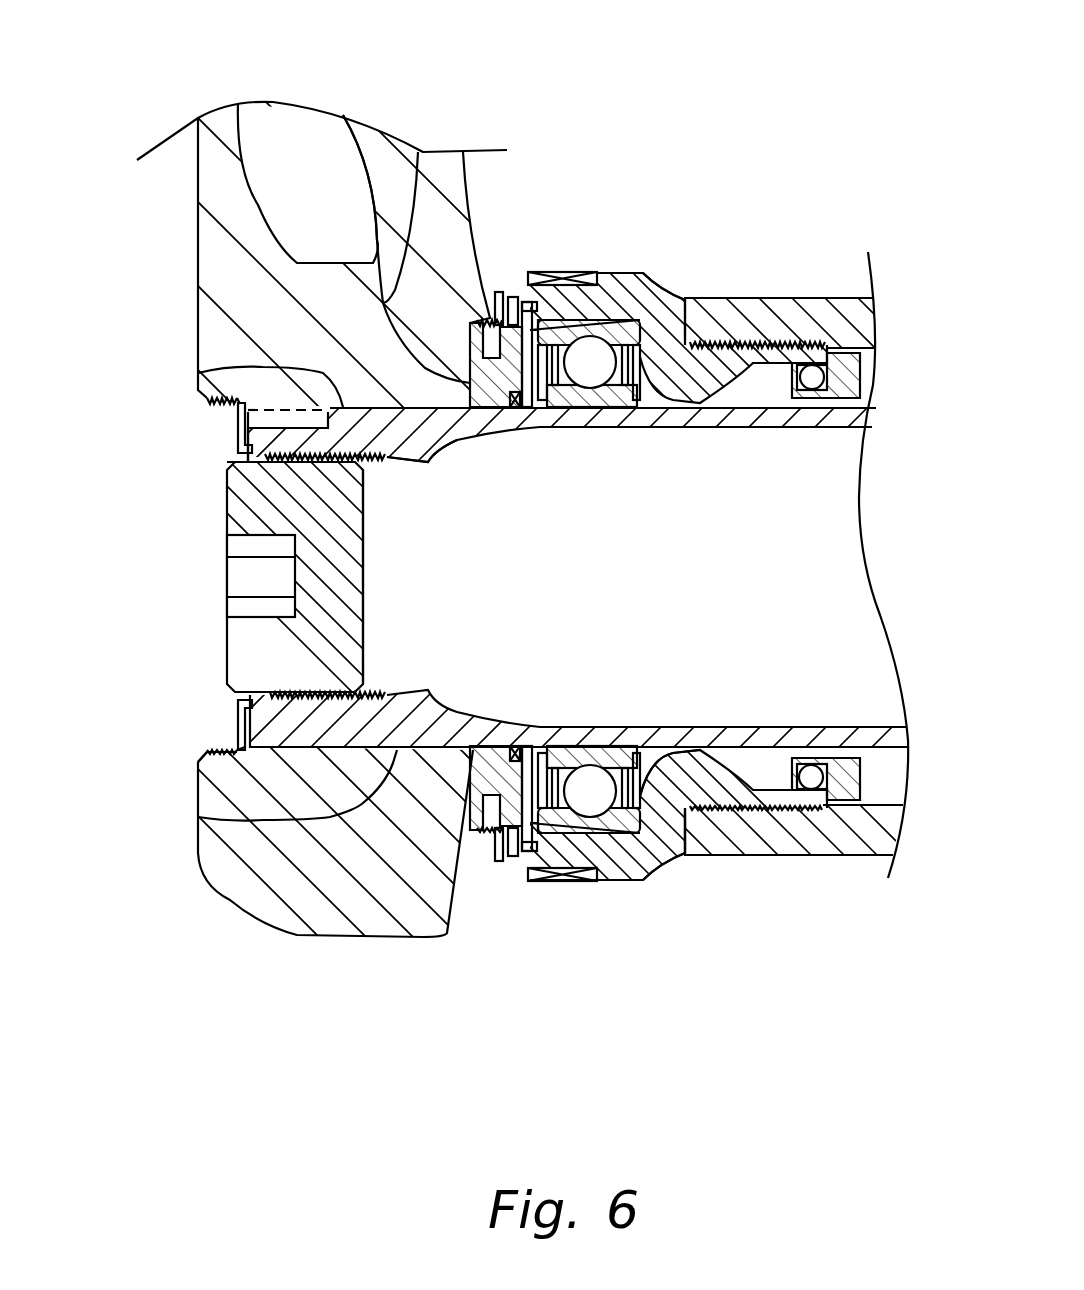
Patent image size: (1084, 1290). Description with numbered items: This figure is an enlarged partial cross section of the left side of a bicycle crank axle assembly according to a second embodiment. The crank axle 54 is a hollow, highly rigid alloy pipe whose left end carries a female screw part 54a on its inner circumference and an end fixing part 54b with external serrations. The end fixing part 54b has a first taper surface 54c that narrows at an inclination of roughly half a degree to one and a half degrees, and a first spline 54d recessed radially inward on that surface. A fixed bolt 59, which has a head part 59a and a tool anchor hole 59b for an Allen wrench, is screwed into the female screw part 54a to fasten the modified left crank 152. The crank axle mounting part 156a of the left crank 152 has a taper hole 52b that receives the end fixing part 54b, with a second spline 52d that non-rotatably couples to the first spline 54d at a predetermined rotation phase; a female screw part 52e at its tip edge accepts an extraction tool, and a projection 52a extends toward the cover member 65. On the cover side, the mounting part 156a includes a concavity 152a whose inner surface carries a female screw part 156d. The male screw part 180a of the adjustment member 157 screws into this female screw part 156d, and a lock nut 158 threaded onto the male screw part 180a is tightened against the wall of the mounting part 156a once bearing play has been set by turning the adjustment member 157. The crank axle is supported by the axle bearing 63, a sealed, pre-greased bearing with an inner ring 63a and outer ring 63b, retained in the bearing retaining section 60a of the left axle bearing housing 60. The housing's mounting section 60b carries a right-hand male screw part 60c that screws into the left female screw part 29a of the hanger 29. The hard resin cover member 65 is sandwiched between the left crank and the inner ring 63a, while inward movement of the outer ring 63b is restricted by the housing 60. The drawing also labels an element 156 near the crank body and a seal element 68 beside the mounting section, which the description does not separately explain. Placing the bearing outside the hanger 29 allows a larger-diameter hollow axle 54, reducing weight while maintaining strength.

The hanger 29 is at (879, 860).
The left female screw part 29a is at (787, 807).
The projection 52a is at (427, 462).
The taper hole 52b is at (365, 462).
The second spline 52d is at (232, 468).
The female screw part 52e is at (238, 407).
The crank axle 54 is at (465, 800).
The female screw part 54a is at (365, 500).
The end fixing part 54b is at (197, 375).
The first taper surface 54c is at (198, 817).
The first spline 54d is at (198, 762).
The fixed bolt 59 is at (227, 670).
The head part 59a is at (235, 448).
The tool anchor hole 59b is at (228, 570).
The left axle bearing housing 60 is at (635, 258).
The bearing retaining section 60a is at (567, 837).
The mounting section 60b is at (723, 793).
The male screw part 60c is at (762, 350).
The axle bearing 63 is at (620, 310).
The inner ring 63a is at (673, 757).
The outer ring 63b is at (603, 837).
The cover member 65 is at (538, 412).
The seal ring 68 is at (806, 768).
The left crank 152 is at (484, 182).
The concavity 152a is at (343, 120).
The bearing cup 156 is at (490, 266).
The crank axle mounting part 156a is at (278, 912).
The female screw part 156d is at (486, 830).
The adjustment member 157 is at (527, 852).
The lock nut 158 is at (499, 862).
The male screw part 180a is at (466, 320).